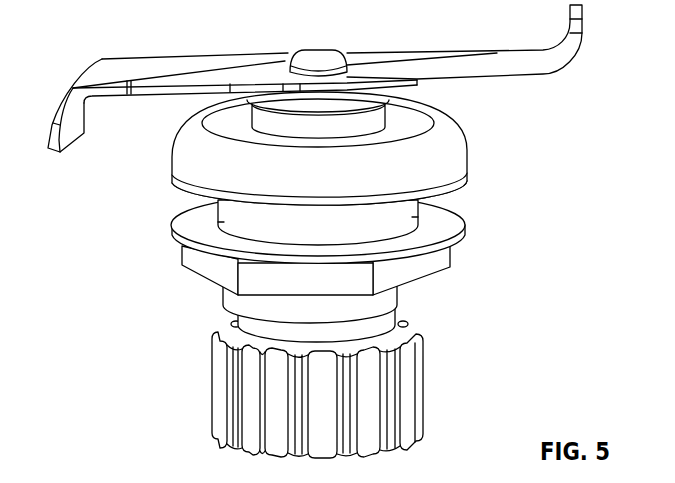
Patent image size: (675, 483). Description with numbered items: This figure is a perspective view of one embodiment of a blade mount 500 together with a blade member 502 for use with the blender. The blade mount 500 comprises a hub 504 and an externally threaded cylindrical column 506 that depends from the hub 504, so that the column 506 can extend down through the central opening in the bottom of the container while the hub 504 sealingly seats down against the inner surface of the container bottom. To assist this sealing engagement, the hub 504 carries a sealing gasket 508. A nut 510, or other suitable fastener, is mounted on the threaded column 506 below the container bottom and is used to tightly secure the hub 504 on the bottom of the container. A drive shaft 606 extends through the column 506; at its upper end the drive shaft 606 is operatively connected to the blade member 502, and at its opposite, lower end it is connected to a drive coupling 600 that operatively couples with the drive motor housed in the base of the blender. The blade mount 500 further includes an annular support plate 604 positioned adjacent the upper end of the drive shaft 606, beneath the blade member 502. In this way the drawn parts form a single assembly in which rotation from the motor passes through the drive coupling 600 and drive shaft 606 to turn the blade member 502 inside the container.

The blade mount 500 is at (450, 133).
The blade member 502 is at (177, 62).
The hub 504 is at (181, 155).
The externally threaded cylindrical column 506 is at (440, 202).
The sealing gasket 508 is at (180, 192).
The nut 510 is at (450, 260).
The drive coupling 600 is at (422, 398).
The annular support plate 604 is at (385, 97).
The drive shaft 606 is at (327, 50).